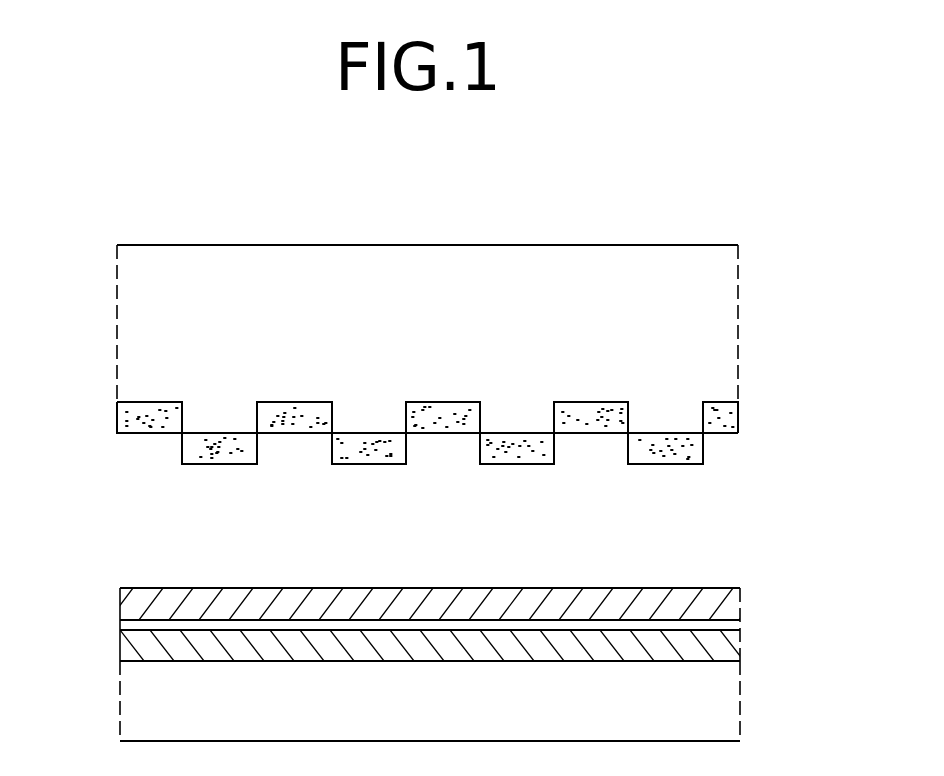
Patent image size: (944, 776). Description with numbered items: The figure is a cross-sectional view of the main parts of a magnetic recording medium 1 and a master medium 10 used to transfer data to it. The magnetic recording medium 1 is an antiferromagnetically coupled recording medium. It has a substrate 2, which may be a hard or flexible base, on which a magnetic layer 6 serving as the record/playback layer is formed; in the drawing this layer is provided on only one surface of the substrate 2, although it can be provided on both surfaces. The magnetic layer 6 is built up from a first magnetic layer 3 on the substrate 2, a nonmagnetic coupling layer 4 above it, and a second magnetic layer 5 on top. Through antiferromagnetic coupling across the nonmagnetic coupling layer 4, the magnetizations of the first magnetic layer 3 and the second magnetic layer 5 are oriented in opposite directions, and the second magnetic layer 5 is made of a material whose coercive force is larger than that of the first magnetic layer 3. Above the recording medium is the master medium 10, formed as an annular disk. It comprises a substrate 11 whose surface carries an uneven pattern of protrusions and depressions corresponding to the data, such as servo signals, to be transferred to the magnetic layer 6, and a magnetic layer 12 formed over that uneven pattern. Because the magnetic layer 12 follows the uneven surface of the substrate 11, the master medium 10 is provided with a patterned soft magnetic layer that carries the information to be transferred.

The magnetic recording medium 1 is at (430, 656).
The substrate 2 is at (128, 712).
The first magnetic layer 3 is at (406, 654).
The nonmagnetic coupling layer 4 is at (120, 629).
The second magnetic layer 5 is at (128, 604).
The magnetic layer 6 is at (392, 625).
The master medium 10 is at (449, 354).
The substrate 11 is at (130, 345).
The magnetic layer 12 is at (125, 425).